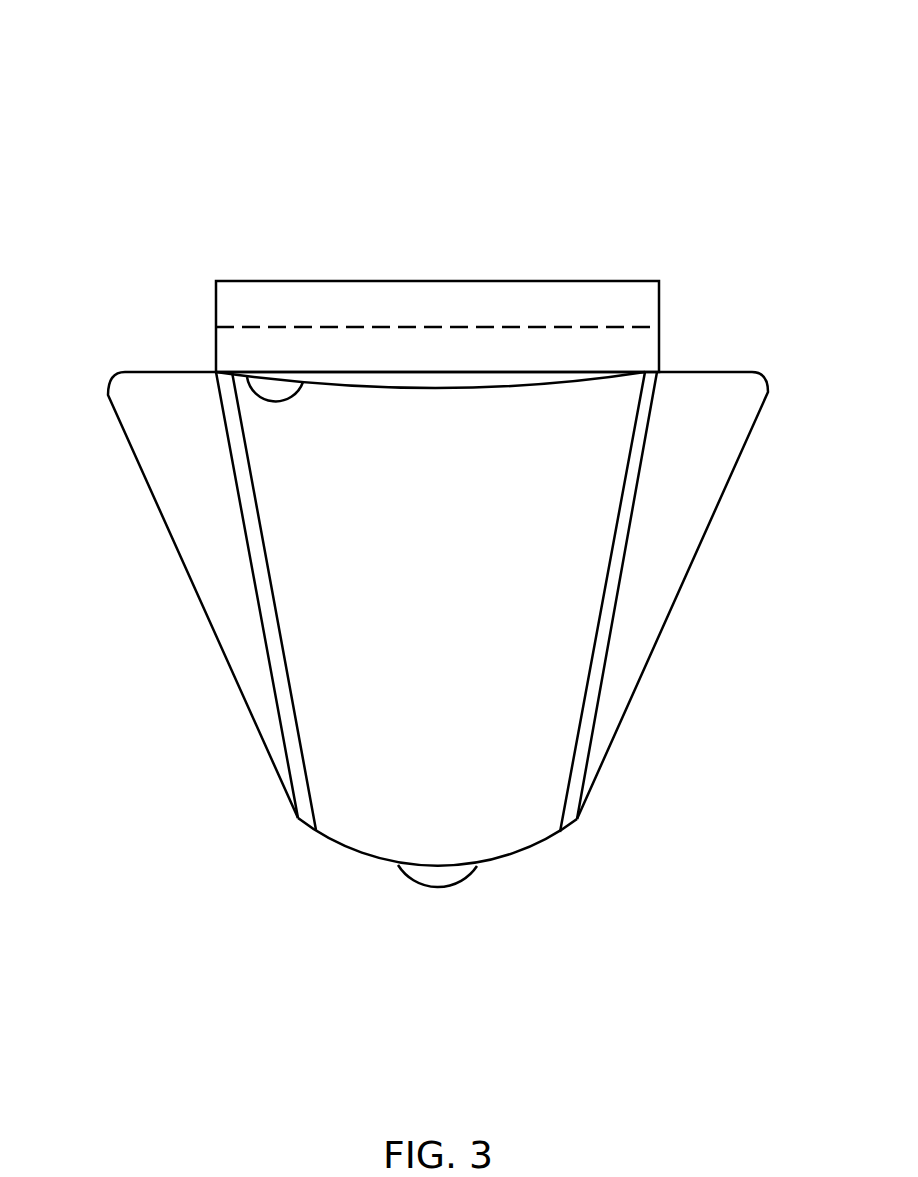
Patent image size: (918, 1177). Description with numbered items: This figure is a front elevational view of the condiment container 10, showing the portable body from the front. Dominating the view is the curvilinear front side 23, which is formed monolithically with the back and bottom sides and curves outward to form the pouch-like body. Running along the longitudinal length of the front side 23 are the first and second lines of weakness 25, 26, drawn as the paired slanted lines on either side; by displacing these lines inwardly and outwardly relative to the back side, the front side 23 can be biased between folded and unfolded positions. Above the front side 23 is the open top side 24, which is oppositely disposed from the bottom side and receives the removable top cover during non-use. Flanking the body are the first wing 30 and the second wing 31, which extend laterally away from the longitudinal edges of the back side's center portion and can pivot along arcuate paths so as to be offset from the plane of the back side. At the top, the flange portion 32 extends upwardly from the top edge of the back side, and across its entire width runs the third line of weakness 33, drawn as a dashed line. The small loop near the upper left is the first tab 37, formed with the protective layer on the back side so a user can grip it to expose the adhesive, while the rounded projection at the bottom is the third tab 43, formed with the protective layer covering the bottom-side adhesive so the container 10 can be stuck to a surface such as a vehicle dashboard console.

The condiment container 10 is at (403, 88).
The curvilinear front side 23 is at (458, 577).
The open top side 24 is at (485, 382).
The first line of weakness 25 is at (280, 633).
The second line of weakness 26 is at (590, 672).
The first wing 30 is at (175, 420).
The second wing 31 is at (703, 467).
The flange portion 32 is at (347, 292).
The third line of weakness 33 is at (387, 320).
The first tab 37 is at (268, 395).
The third tab 43 is at (438, 878).